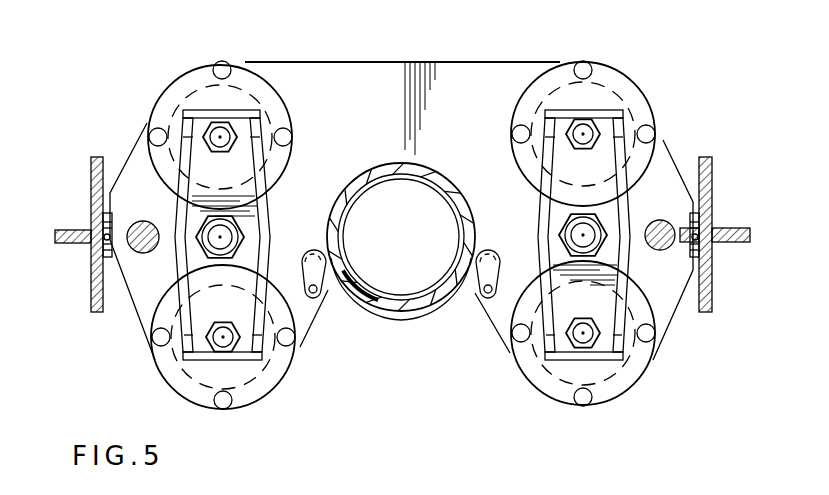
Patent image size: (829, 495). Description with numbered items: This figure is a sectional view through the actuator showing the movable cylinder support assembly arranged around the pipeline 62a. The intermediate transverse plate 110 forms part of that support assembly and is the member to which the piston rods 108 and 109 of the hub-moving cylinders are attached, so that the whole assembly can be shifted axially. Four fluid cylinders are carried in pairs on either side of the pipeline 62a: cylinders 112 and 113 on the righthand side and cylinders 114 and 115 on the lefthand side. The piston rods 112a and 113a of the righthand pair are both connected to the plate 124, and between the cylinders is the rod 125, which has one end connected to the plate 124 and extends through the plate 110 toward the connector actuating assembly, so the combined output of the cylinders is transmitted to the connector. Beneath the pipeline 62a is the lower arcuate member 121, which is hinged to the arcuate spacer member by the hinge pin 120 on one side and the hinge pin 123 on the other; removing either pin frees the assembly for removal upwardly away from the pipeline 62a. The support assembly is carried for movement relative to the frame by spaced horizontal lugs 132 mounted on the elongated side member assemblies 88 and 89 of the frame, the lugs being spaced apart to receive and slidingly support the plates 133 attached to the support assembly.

The intermediate transverse plate 110 is at (360, 112).
The cylinder 115 is at (250, 67).
The cylinder 114 is at (270, 392).
The cylinder 112 is at (648, 98).
The piston rod 112a is at (592, 127).
The cylinder 113 is at (642, 375).
The piston rod 113a is at (575, 342).
The plate 124 is at (558, 197).
The rod 125 is at (576, 236).
The pipeline 62a is at (440, 172).
The second arcuate member 121 is at (408, 322).
The hinge pin 123 is at (328, 300).
The hinge pin 120 is at (476, 300).
The side member assembly 89 is at (62, 216).
The side member assembly 88 is at (730, 216).
The piston rod 109 is at (150, 255).
The piston rod 108 is at (660, 251).
The horizontal lugs 132 is at (110, 226).
The plates 133 is at (105, 246).